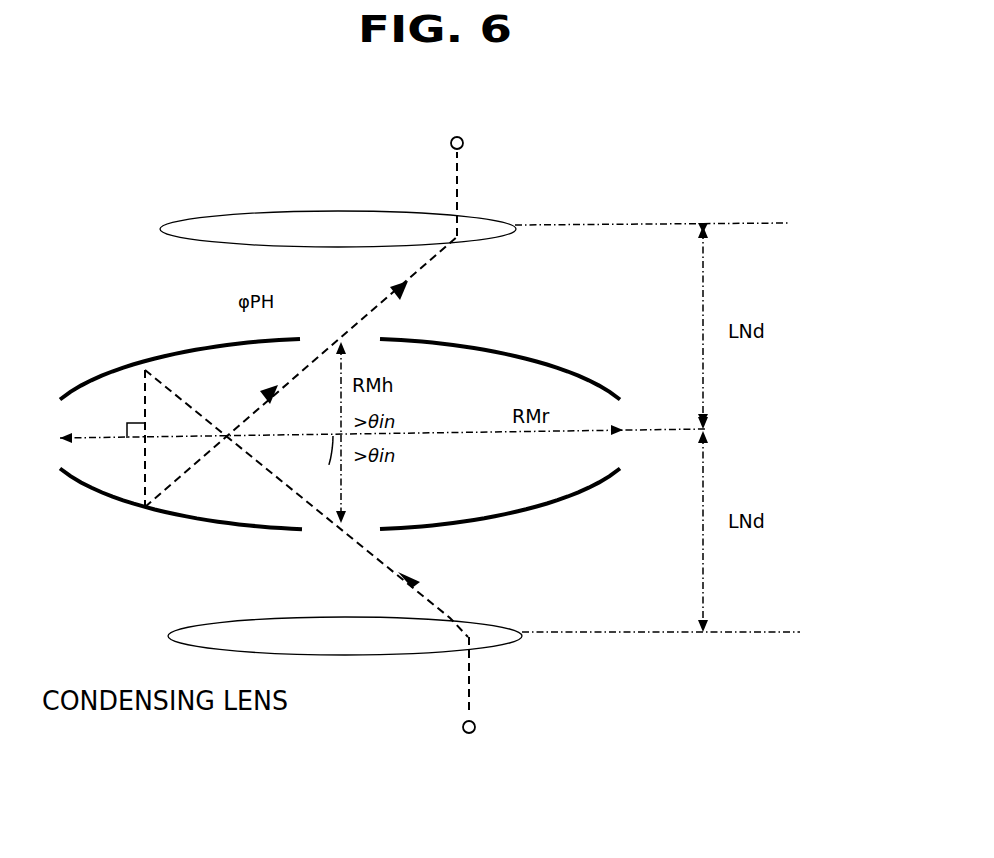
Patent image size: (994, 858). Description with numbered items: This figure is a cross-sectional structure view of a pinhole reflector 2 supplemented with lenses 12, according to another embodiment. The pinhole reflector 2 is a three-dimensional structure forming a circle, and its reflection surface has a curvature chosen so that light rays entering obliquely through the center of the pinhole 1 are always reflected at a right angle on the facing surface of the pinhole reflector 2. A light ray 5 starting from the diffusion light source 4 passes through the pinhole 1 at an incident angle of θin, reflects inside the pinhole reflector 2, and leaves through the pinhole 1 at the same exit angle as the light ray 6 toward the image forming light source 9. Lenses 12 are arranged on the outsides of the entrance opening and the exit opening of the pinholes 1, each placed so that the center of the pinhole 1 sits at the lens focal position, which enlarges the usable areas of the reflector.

The pinhole 1 is at (330, 340).
The pinhole reflector 2 is at (553, 360).
The diffusion light source 4 is at (475, 728).
The light ray 5 is at (306, 503).
The light ray 6 is at (301, 371).
The image forming light source 9 is at (463, 143).
The lens 12 is at (188, 221).